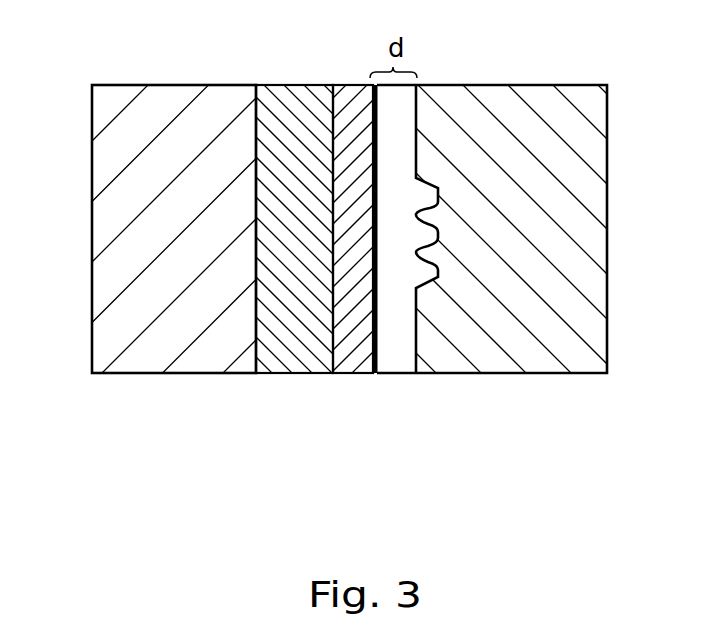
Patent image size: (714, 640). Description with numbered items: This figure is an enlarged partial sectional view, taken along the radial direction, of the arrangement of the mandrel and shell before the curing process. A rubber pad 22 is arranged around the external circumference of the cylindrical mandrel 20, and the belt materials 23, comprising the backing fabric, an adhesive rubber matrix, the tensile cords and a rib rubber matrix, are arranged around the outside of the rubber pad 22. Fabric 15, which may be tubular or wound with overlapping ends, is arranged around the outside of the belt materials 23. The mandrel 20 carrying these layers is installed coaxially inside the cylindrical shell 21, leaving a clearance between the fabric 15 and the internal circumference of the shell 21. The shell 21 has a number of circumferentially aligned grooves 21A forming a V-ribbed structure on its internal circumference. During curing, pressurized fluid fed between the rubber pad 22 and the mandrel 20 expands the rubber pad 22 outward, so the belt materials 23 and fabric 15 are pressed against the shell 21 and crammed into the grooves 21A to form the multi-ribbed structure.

The fabric 15 is at (380, 374).
The mandrel 20 is at (112, 233).
The shell 21 is at (587, 232).
The grooves 21A is at (421, 182).
The rubber pad 22 is at (292, 85).
The belt materials 23 is at (348, 85).